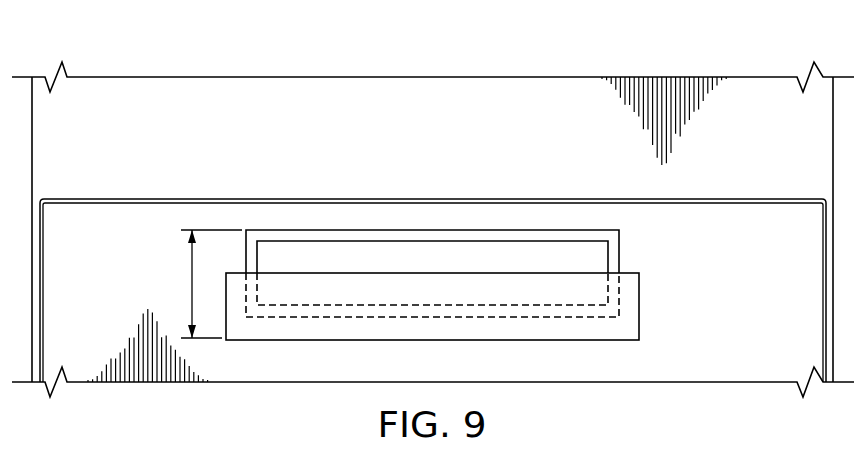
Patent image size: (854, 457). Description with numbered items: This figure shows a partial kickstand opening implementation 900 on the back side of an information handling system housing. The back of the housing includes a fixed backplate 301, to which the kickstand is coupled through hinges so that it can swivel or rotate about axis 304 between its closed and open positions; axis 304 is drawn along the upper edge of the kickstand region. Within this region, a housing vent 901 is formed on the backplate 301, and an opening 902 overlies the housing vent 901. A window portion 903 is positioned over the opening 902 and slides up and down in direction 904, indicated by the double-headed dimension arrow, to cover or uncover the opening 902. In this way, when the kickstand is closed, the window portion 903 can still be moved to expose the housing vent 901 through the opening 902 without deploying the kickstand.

The semiconductor device 900 is at (252, 67).
The fixed backplate 301 is at (412, 143).
The axis 304 is at (702, 192).
The housing vent 901 is at (609, 258).
The opening 902 is at (621, 245).
The window portion 903 is at (640, 310).
The direction 904 is at (192, 284).